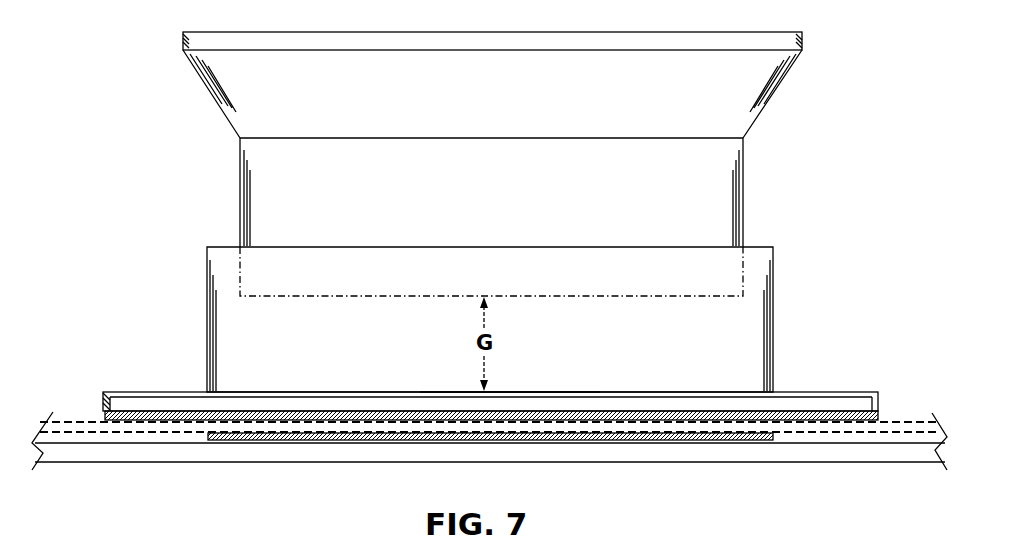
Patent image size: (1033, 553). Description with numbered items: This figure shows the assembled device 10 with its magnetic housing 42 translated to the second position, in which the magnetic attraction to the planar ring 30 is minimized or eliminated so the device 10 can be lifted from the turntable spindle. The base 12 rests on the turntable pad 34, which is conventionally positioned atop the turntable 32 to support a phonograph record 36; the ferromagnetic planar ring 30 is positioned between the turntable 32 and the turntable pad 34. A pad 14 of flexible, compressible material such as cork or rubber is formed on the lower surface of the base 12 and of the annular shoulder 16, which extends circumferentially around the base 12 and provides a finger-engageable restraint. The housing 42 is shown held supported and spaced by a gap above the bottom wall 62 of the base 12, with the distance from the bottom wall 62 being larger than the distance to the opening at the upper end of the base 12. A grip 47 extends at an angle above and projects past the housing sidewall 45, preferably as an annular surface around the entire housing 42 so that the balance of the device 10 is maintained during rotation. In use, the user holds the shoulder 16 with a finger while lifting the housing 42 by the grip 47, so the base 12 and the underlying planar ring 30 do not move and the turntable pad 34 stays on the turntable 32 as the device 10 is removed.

The device 10 is at (158, 231).
The base 12 is at (772, 247).
The pad 14 is at (876, 418).
The annular shoulder 16 is at (170, 400).
The planar ring 30 is at (240, 440).
The turntable 32 is at (127, 455).
The turntable pad 34 is at (877, 432).
The phonograph record 36 is at (923, 423).
The housing 42 is at (763, 60).
The housing sidewall 45 is at (342, 197).
The grip 47 is at (342, 97).
The bottom wall 62 is at (531, 392).